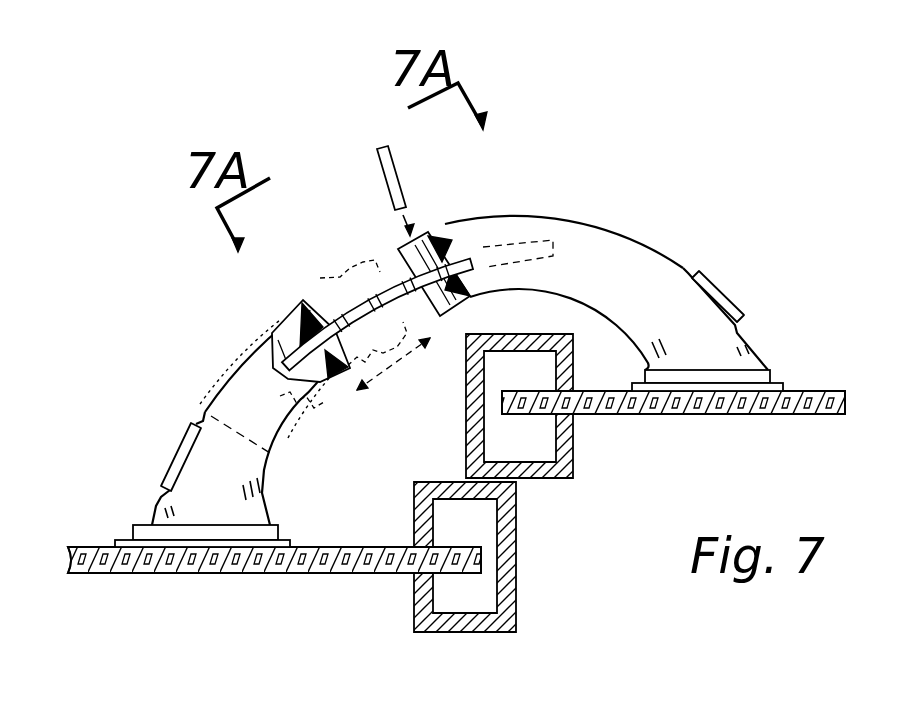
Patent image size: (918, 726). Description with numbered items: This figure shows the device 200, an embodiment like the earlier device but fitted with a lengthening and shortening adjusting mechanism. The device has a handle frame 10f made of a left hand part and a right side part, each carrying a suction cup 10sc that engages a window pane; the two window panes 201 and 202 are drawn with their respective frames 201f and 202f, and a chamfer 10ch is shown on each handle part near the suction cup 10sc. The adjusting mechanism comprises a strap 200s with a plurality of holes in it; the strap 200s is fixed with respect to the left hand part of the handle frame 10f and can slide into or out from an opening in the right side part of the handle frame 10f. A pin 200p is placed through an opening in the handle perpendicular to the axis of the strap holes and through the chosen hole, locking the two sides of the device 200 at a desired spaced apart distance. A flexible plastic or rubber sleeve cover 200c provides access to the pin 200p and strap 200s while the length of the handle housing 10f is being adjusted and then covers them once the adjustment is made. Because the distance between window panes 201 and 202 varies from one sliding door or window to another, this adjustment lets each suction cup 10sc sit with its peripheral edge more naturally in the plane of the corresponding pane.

The handle frame 10f is at (237, 388).
The chamfer 10ch is at (177, 450).
The suction cup 10sc is at (287, 546).
The device 200 is at (383, 307).
The strap 200s is at (357, 300).
The sleeve cover 200c is at (333, 412).
The pin 200p is at (403, 182).
The window pane 201 is at (345, 577).
The first frame 201f is at (508, 607).
The window pane 202 is at (702, 414).
The second frame 202f is at (573, 445).